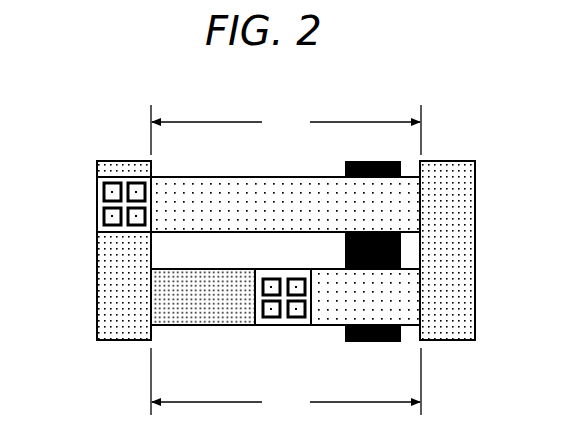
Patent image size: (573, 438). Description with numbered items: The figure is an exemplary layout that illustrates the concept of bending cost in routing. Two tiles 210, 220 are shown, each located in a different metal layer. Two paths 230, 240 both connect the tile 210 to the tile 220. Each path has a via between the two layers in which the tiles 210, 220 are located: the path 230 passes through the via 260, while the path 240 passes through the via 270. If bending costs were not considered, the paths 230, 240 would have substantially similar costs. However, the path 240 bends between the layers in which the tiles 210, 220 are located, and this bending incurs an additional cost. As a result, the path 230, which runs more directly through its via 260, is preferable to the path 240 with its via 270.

The tile 210 is at (141, 299).
The tile 220 is at (466, 263).
The path 230 is at (286, 130).
The path 240 is at (286, 382).
The via 260 is at (88, 183).
The via 270 is at (307, 328).